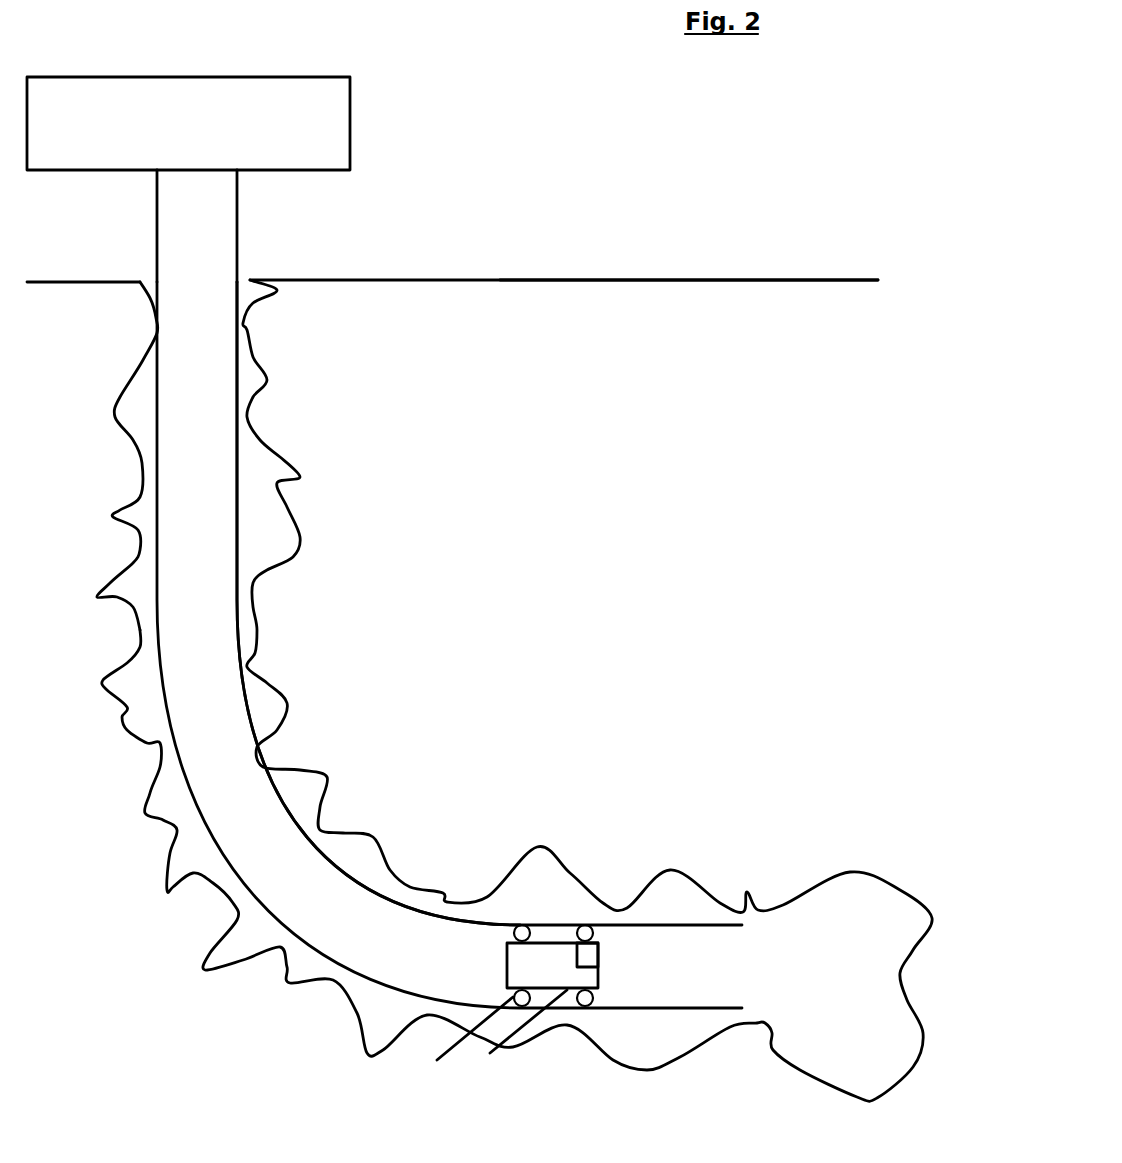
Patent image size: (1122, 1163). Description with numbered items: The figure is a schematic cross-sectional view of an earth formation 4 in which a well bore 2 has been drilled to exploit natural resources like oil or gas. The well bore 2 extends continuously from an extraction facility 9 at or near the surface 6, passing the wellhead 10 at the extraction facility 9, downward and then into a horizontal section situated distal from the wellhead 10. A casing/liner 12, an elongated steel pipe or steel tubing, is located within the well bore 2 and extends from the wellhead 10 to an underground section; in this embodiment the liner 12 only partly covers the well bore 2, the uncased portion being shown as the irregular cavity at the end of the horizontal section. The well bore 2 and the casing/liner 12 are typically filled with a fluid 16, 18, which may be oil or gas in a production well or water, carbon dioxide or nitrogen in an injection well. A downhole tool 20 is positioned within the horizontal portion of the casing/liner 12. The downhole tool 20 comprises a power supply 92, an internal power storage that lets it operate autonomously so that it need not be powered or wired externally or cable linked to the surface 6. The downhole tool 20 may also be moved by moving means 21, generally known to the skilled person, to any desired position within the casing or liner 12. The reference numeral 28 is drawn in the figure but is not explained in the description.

The well bore 2 is at (270, 450).
The earth formation 4 is at (686, 300).
The surface 6 is at (618, 279).
The extraction facility 9 is at (350, 157).
The wellhead 10 is at (237, 177).
The casing/liner 12 is at (153, 363).
The fluid 16 is at (143, 560).
The fluid 18 is at (220, 593).
The downhole tool 20 is at (490, 1053).
The moving means 21 is at (437, 1060).
The downhole tool 28 is at (600, 983).
The power supply 92 is at (590, 955).